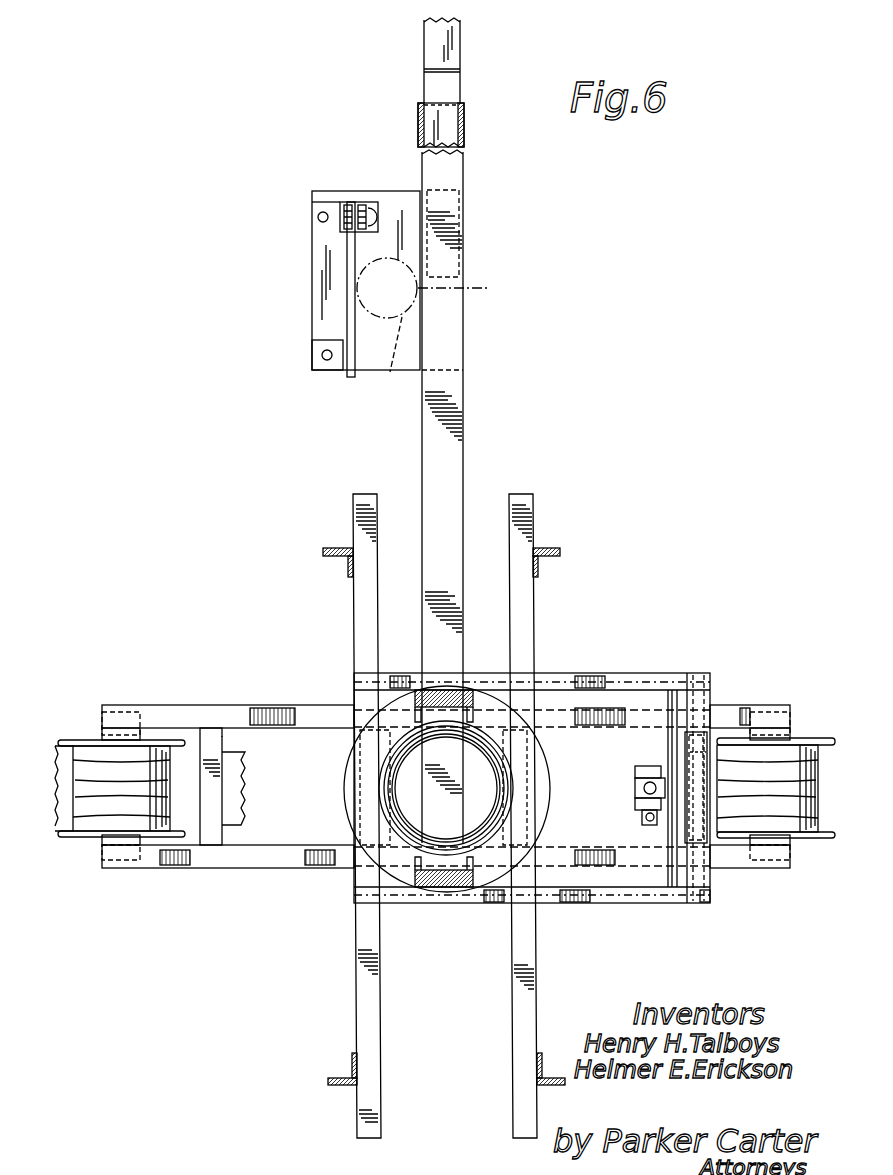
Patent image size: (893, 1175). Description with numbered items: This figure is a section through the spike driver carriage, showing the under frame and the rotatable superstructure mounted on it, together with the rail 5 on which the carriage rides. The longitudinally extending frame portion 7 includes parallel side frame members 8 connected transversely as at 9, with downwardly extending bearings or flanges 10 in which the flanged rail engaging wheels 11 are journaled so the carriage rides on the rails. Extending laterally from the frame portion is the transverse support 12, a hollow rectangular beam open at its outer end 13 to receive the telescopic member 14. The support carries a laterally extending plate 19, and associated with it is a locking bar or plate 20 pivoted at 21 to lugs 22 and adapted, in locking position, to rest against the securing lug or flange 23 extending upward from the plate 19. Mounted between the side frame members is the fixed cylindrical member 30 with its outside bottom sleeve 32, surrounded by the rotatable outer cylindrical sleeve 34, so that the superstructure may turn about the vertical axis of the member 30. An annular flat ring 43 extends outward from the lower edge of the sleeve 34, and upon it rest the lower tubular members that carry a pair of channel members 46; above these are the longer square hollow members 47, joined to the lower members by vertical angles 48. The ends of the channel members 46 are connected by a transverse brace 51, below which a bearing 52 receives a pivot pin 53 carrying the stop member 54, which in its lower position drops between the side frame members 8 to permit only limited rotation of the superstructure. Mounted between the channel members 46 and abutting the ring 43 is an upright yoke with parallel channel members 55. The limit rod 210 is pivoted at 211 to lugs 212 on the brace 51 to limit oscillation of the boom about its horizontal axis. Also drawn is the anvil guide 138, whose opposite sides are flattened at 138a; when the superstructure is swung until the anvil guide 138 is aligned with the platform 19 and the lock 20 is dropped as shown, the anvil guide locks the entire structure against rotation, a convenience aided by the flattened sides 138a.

The track rail 5 is at (247, 782).
The longitudinally extending frame portion 7 is at (222, 850).
The side frame members 8 is at (257, 710).
The transverse connection 9 is at (218, 768).
The bearings or flanges 10 is at (108, 733).
The flanged rail engaging wheels 11 is at (100, 817).
The transverse support 12 is at (450, 428).
The open outer end 13 is at (420, 103).
The telescopic member 14 is at (450, 50).
The laterally extending plate 19 is at (318, 264).
The locking bar or plate 20 is at (346, 296).
The pivot 21 is at (318, 217).
The lugs 22 is at (345, 205).
The securing lug or flange 23 is at (338, 362).
The cylindrical member 30 is at (398, 810).
The outside bottom sleeve 32 is at (505, 788).
The outer cylindrical sleeve 34 is at (392, 736).
The annular flat ring 43 is at (380, 777).
The channel members 46 is at (584, 688).
The square hollow members 47 is at (358, 508).
The vertical elements 48 is at (323, 552).
The transverse brace 51 is at (670, 736).
The bearing 52 is at (691, 673).
The pivot pin 53 is at (688, 829).
The stop member 54 is at (689, 752).
The channel members of yoke 55 is at (432, 688).
The anvil guide 138 is at (391, 361).
The flattened sides 138a is at (296, 336).
The limit pin or rod 210 is at (635, 787).
The pivot 211 is at (641, 816).
The lugs 212 is at (636, 771).